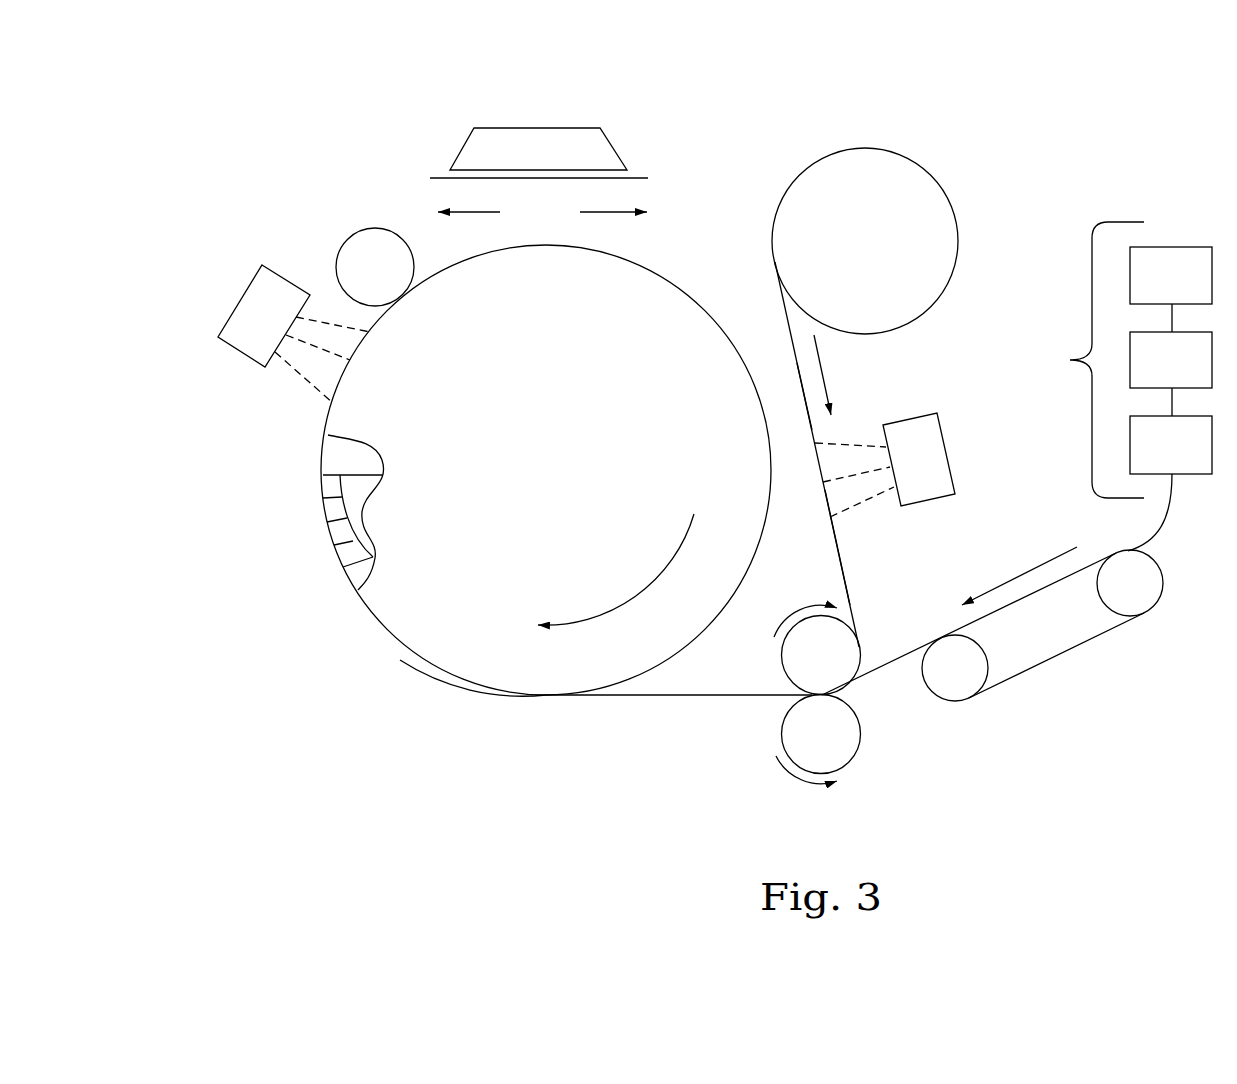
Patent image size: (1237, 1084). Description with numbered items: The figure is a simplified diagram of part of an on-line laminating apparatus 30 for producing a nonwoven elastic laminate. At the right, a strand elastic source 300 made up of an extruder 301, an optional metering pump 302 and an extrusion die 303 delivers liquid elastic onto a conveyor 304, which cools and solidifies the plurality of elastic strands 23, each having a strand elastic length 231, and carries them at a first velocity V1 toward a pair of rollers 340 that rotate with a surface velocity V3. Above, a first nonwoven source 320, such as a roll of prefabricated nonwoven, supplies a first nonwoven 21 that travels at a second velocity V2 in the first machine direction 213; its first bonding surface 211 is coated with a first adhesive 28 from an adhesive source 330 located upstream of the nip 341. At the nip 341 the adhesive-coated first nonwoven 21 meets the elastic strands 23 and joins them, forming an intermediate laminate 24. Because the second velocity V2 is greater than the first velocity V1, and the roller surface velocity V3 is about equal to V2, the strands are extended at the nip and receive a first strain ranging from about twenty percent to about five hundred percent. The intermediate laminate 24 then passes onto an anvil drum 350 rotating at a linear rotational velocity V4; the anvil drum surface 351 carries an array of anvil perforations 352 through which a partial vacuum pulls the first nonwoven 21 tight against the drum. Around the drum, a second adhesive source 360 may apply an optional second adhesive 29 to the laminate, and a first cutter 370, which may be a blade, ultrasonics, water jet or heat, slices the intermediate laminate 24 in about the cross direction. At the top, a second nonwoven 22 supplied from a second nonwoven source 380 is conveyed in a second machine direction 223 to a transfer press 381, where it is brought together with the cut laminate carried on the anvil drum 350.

The apparatus 30 is at (270, 190).
The anvil drum 350 is at (370, 627).
The drum surface 351 is at (473, 687).
The anvil perforations 352 is at (342, 537).
The first cutter 370 is at (363, 255).
The second adhesive source 360 is at (240, 303).
The second adhesive 29 is at (305, 380).
The second nonwoven source 380 is at (600, 132).
The transfer press 381 is at (565, 137).
The second nonwoven 22 is at (633, 177).
The second machine direction 223 is at (542, 214).
The first nonwoven source 320 is at (927, 157).
The first nonwoven 21 is at (797, 363).
The first machine direction 213 is at (828, 395).
The first bonding surface 211 is at (842, 562).
The dryer 330 is at (947, 443).
The first adhesive 28 is at (838, 447).
The pair of rollers 340 is at (841, 670).
The nip 341 is at (855, 698).
The intermediate laminate 24 is at (710, 698).
The elastic strands 23 is at (885, 665).
The strand elastic length 231 is at (1050, 562).
The conveyor 304 is at (1062, 655).
The strand elastic source 300 is at (1111, 386).
The extruder 301 is at (1171, 275).
The metering pump 302 is at (1171, 360).
The extrusion die 303 is at (1171, 445).
The first velocity V1 is at (1003, 580).
The second velocity V2 is at (822, 365).
The surface velocity V3 is at (790, 615).
The linear rotational velocity V4 is at (663, 572).